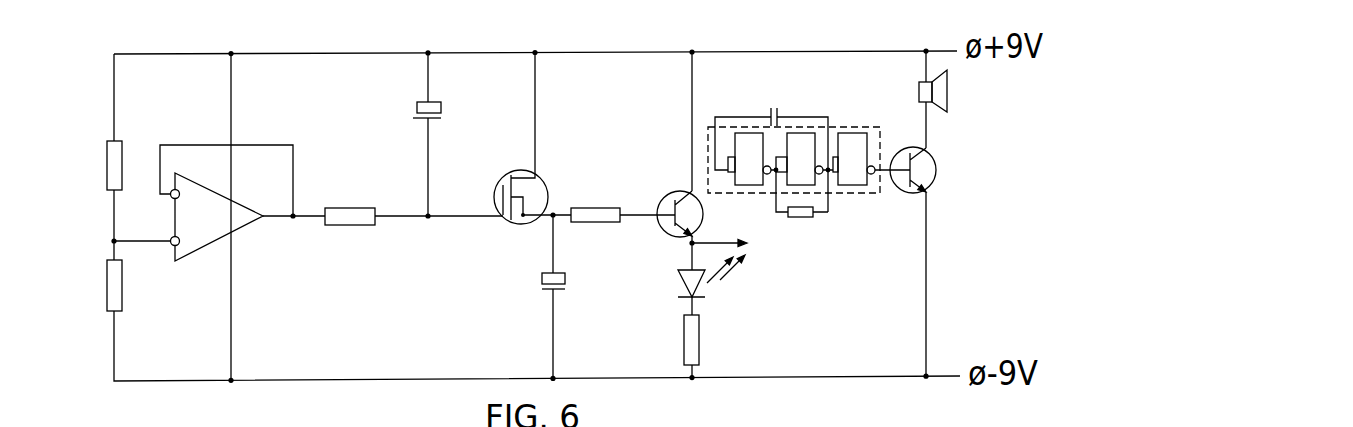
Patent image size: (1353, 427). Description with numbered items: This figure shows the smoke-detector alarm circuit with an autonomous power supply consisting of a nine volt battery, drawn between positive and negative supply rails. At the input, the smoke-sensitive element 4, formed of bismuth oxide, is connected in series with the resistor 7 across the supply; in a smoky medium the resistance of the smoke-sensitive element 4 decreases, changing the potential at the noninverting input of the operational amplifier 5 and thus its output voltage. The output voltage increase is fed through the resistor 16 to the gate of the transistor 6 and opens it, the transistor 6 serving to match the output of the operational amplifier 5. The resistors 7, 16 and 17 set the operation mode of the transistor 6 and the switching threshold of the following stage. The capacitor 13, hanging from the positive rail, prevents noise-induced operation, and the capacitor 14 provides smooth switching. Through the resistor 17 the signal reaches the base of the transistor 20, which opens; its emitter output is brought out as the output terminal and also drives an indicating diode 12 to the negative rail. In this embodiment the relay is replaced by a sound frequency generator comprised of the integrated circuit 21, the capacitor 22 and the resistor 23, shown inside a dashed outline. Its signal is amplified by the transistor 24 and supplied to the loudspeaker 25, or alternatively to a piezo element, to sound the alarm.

The smoke-sensitive element 4 is at (122, 290).
The operational amplifier 5 is at (245, 230).
The transistor 6 is at (509, 223).
The resistor 7 is at (116, 141).
The light emitting diode 12 is at (707, 292).
The capacitor 13 is at (414, 103).
The capacitor 14 is at (566, 283).
The resistor 16 is at (335, 226).
The resistor 17 is at (580, 222).
The transistor 20 is at (664, 234).
The integrated circuit 21 is at (863, 125).
The capacitor 22 is at (773, 108).
The resistor 23 is at (813, 212).
The transistor 24 is at (936, 180).
The loudspeaker 25 is at (948, 92).